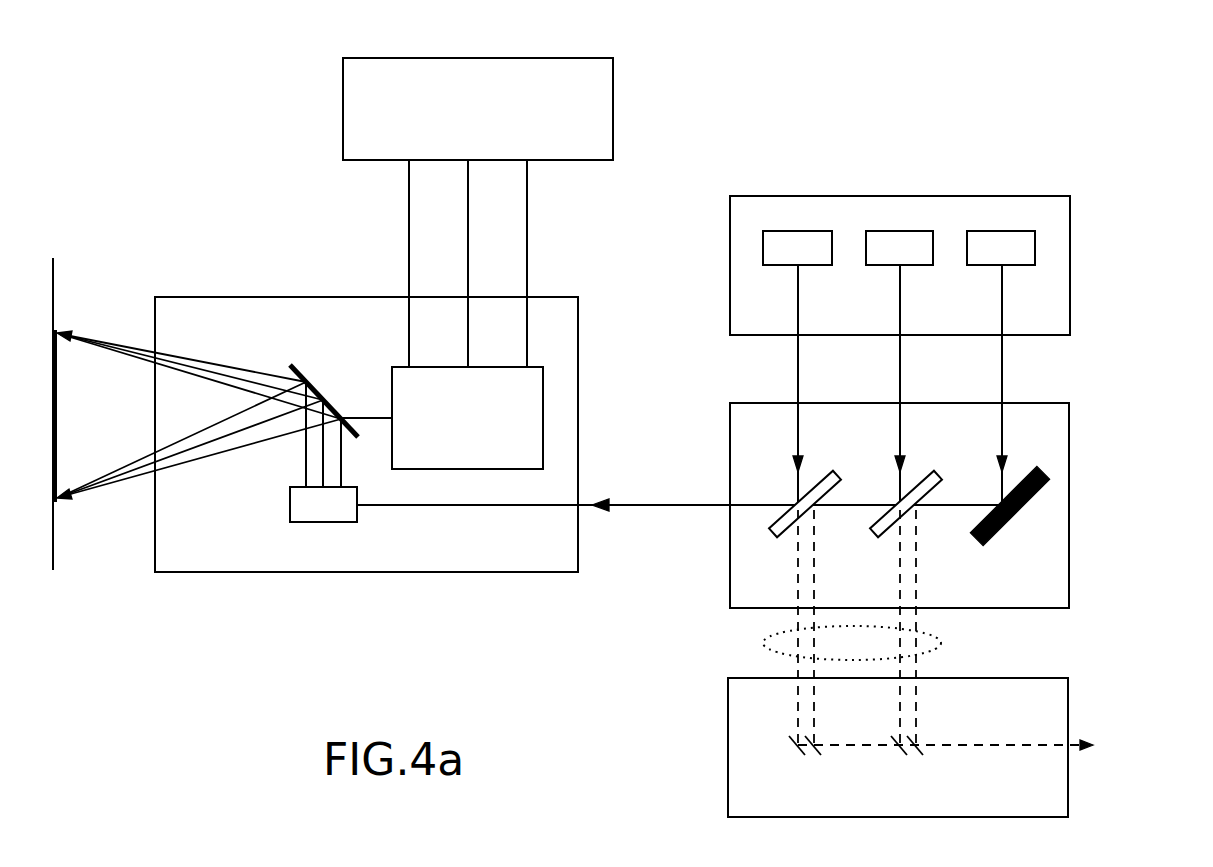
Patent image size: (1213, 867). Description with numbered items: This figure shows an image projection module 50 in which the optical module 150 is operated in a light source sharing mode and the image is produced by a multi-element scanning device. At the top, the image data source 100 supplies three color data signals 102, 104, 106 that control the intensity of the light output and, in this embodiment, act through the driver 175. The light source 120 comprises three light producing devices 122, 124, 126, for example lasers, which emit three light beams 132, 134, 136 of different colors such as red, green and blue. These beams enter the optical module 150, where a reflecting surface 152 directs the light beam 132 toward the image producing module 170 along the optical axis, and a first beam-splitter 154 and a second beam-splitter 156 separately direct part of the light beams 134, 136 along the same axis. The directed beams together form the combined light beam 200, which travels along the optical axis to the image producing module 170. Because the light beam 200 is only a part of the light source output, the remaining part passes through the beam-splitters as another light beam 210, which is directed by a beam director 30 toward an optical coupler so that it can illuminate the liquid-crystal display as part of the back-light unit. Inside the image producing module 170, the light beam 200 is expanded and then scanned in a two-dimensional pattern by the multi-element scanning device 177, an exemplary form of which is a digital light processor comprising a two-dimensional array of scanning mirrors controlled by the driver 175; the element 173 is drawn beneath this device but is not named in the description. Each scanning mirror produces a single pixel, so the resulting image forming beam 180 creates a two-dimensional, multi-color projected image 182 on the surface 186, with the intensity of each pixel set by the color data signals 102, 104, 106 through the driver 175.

The beam director 30 is at (728, 732).
The image projection module 50 is at (758, 106).
The image data source 100 is at (558, 60).
The color data signal 102 is at (527, 262).
The color data signal 104 is at (468, 262).
The color data signal 106 is at (409, 262).
The light source 120 is at (730, 292).
The light producing device 122 is at (1008, 266).
The light producing device 124 is at (906, 266).
The light producing device 126 is at (805, 266).
The light beam 132 is at (1002, 392).
The light beam 134 is at (900, 392).
The light beam 136 is at (798, 392).
The optical module 150 is at (730, 437).
The reflecting surface 152 is at (1022, 478).
The first beam-splitter 154 is at (918, 478).
The second beam-splitter 156 is at (816, 478).
The image producing module 170 is at (223, 296).
The DLP chip 173 is at (315, 521).
The driver 175 is at (458, 471).
The multi-element scanning device 177 is at (293, 370).
The image forming beam 180 is at (137, 338).
The projected image 182 is at (57, 408).
The surface 186 is at (56, 277).
The light beam 200 is at (618, 503).
The light beam 210 is at (768, 636).